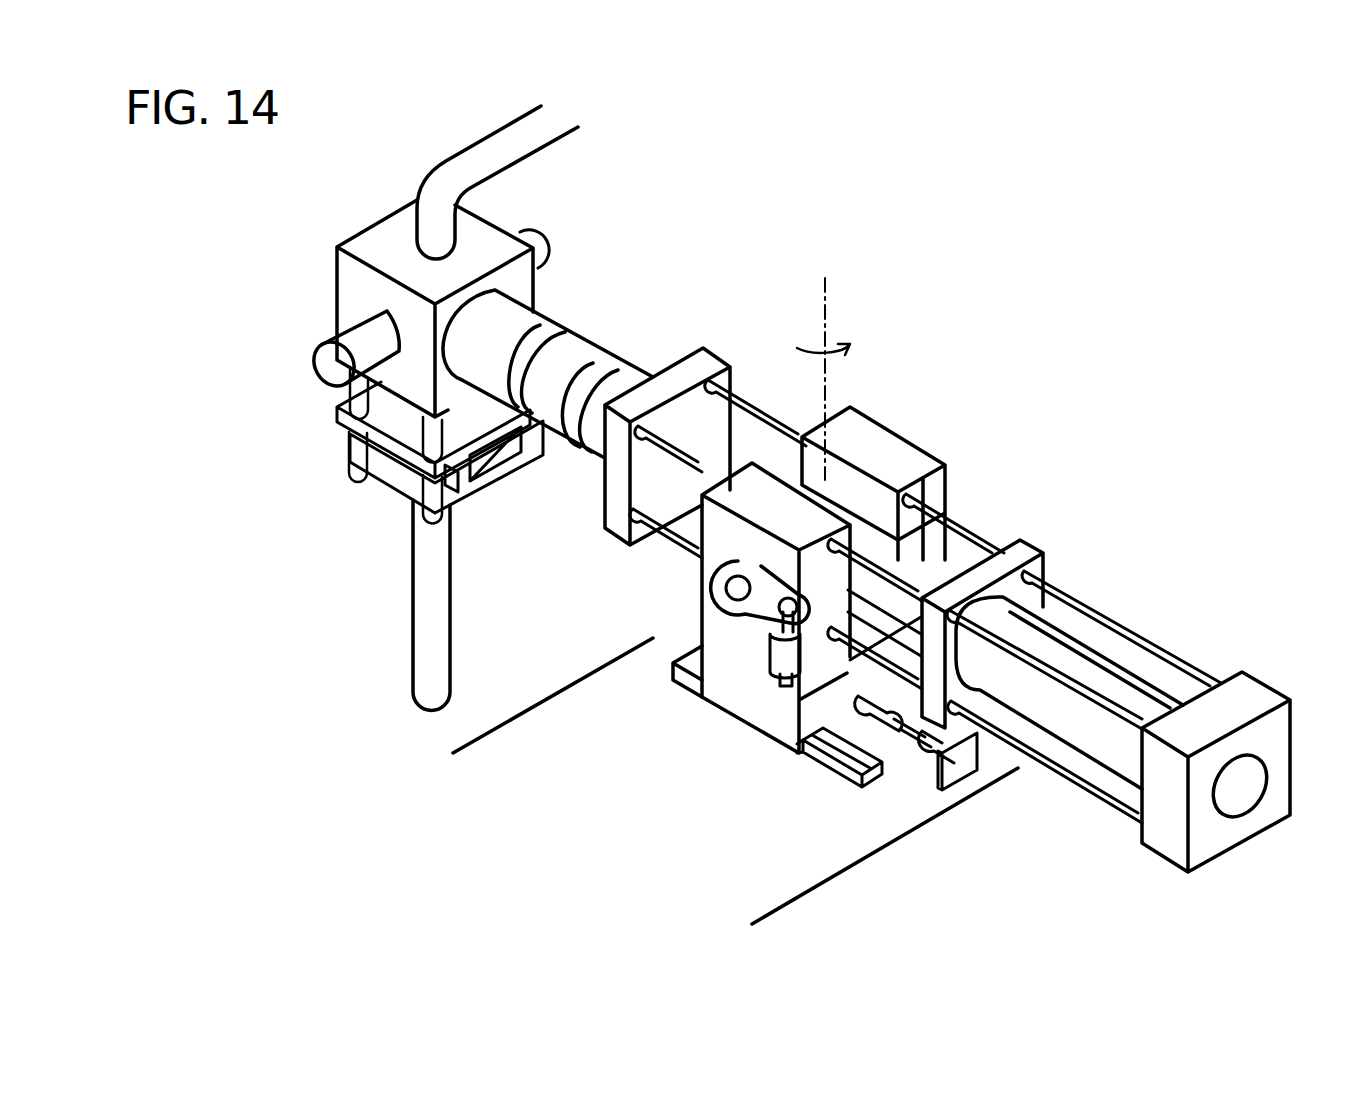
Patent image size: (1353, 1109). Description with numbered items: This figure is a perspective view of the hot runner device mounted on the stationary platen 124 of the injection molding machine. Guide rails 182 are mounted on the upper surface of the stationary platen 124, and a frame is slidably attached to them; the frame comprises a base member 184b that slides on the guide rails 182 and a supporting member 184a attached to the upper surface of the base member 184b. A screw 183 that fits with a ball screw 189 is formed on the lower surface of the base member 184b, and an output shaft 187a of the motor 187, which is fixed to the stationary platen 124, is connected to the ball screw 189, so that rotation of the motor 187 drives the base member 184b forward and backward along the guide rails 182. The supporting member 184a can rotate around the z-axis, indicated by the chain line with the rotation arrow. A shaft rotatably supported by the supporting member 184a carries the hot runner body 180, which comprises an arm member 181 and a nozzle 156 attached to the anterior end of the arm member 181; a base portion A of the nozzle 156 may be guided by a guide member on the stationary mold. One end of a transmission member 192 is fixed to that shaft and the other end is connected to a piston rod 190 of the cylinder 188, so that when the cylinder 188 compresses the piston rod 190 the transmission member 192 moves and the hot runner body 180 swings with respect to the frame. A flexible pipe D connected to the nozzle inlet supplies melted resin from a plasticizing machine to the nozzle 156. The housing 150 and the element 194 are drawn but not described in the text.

The flexible pipe D is at (468, 145).
The head unit housing 150 is at (337, 294).
The nozzle 156 is at (412, 652).
The base portion A is at (487, 482).
The arm member 181 is at (596, 338).
The hot runner body 180 is at (932, 617).
The supporting member 184a is at (938, 452).
The base member 184b is at (668, 683).
The transmission member 192 is at (733, 628).
The piston rod 190 is at (767, 640).
The cylinder 188 is at (788, 672).
The screw 183 is at (832, 735).
The guide rails 182 is at (845, 782).
The ball screw 189 is at (878, 720).
The output shaft 187a is at (905, 745).
The motor 187 is at (930, 757).
The air cylinder 194 is at (1103, 767).
The stationary platen 124 is at (790, 905).